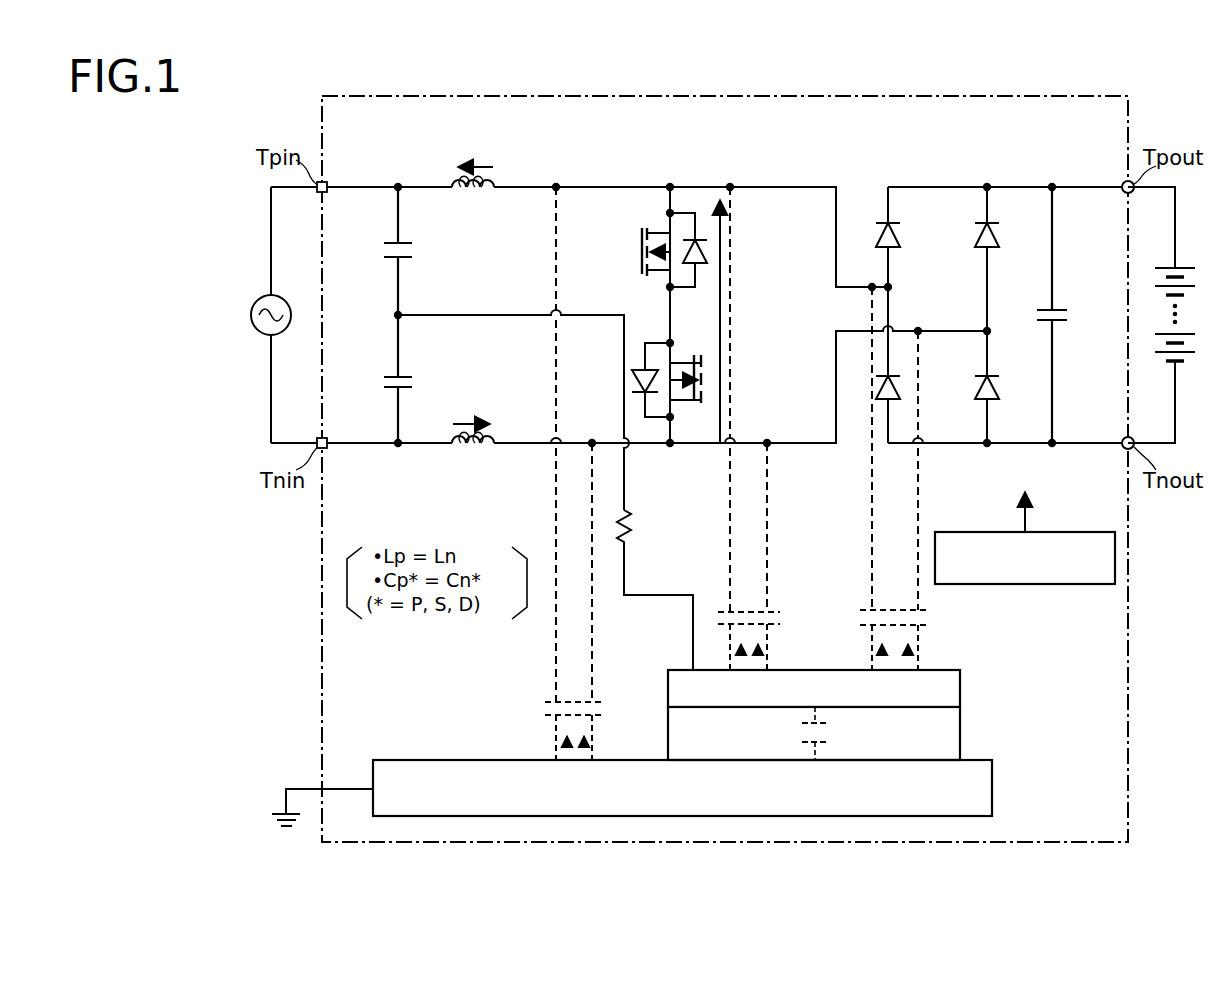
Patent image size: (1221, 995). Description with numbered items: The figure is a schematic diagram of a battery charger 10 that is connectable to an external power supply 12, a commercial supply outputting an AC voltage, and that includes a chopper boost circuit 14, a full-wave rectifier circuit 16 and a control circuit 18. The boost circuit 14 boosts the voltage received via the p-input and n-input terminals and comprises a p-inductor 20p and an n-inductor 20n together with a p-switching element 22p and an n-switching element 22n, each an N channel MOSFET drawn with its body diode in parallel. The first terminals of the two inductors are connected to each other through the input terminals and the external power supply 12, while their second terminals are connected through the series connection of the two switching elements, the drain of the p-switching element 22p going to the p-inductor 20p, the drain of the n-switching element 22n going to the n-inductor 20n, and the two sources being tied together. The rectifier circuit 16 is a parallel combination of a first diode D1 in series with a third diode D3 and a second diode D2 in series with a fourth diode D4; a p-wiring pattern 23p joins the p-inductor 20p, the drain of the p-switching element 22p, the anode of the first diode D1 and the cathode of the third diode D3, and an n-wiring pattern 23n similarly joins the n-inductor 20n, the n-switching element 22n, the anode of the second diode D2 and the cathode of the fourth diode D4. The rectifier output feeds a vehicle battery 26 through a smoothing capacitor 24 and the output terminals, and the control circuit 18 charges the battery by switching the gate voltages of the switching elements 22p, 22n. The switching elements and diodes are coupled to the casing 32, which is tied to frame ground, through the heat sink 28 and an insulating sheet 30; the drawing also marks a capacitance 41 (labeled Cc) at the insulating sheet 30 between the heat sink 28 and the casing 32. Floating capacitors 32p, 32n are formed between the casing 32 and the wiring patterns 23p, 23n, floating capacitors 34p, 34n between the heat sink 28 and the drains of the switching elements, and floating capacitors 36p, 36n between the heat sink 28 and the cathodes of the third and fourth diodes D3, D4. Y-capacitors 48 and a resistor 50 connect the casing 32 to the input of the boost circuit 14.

The battery charger 10 is at (1134, 133).
The external power supply 12 is at (262, 302).
The chopper boost circuit 14 is at (753, 165).
The full-wave rectifier circuit 16 is at (970, 167).
The control circuit 18 is at (1068, 585).
The p-inductor 20p is at (476, 196).
The n-inductor 20n is at (476, 452).
The p-switching element 22p is at (641, 250).
The n-switching element 22n is at (694, 370).
The p-wiring pattern 23p is at (792, 189).
The n-wiring pattern 23n is at (792, 441).
The smoothing capacitor 24 is at (1058, 310).
The vehicle battery 26 is at (1185, 268).
The heat sink 28 is at (961, 678).
The insulating sheet 30 is at (961, 722).
The casing 32 is at (993, 780).
The floating capacitor 32p is at (550, 702).
The floating capacitor 32n is at (598, 702).
The floating capacitor 34p is at (720, 610).
The floating capacitor 34n is at (778, 610).
The floating capacitor 36p is at (866, 627).
The floating capacitor 36n is at (930, 626).
The capacitance Cc of insulating sheet 41 is at (802, 727).
The Y-capacitors 48 is at (402, 246).
The resistor 50 is at (634, 512).
The first diode D1 is at (895, 238).
The second diode D2 is at (995, 238).
The third diode D3 is at (893, 380).
The fourth diode D4 is at (995, 377).